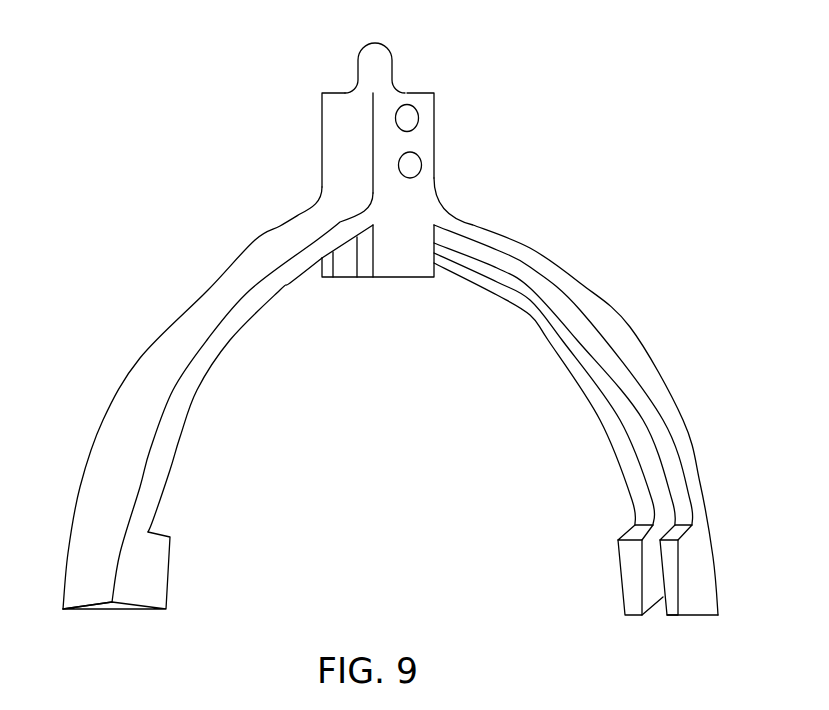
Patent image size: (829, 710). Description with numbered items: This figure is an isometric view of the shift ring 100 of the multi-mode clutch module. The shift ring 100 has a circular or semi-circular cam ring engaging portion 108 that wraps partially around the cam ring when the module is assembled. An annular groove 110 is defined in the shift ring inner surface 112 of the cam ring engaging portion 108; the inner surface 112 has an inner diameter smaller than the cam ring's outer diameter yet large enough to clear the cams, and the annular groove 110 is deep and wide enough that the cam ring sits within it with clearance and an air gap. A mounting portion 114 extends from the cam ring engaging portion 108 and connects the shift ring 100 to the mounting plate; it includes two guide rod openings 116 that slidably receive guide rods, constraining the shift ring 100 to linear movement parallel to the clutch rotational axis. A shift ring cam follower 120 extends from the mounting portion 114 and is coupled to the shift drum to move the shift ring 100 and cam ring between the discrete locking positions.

The shift ring 100 is at (130, 165).
The cam ring engaging portion 108 is at (147, 393).
The annular groove 110 is at (665, 497).
The shift ring inner surface 112 is at (627, 467).
The mounting portion 114 is at (337, 140).
The guide rod openings 116 is at (410, 165).
The shift ring cam follower 120 is at (383, 68).